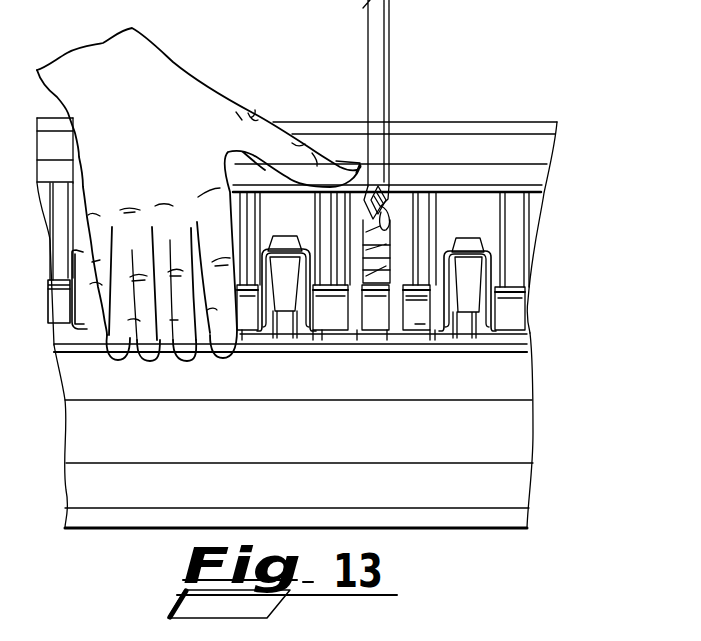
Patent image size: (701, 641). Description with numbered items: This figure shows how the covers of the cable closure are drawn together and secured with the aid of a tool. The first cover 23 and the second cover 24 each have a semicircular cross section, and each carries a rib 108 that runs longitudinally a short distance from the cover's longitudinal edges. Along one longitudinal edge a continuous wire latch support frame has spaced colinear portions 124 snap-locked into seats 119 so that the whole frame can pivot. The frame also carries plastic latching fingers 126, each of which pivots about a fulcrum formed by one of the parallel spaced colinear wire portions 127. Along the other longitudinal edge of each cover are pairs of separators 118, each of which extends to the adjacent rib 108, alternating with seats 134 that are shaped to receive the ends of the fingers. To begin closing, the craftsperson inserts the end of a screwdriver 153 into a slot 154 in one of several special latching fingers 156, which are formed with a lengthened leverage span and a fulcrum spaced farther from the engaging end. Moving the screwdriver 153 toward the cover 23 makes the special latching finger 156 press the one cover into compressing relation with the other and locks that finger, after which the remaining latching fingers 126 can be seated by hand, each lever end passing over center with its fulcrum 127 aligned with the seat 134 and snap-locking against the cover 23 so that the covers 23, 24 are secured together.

The first cover 23 is at (500, 120).
The second cover 24 is at (490, 529).
The rib 108 is at (493, 181).
The separator 118 is at (511, 233).
The seat 119 is at (408, 310).
The colinear portion of wire latch support frame 124 is at (420, 330).
The latching finger 126 is at (471, 291).
The wire portion 127 is at (483, 256).
The seat 134 is at (383, 278).
The screwdriver 153 is at (385, 33).
The slot 154 is at (383, 242).
The special latching finger 156 is at (400, 248).